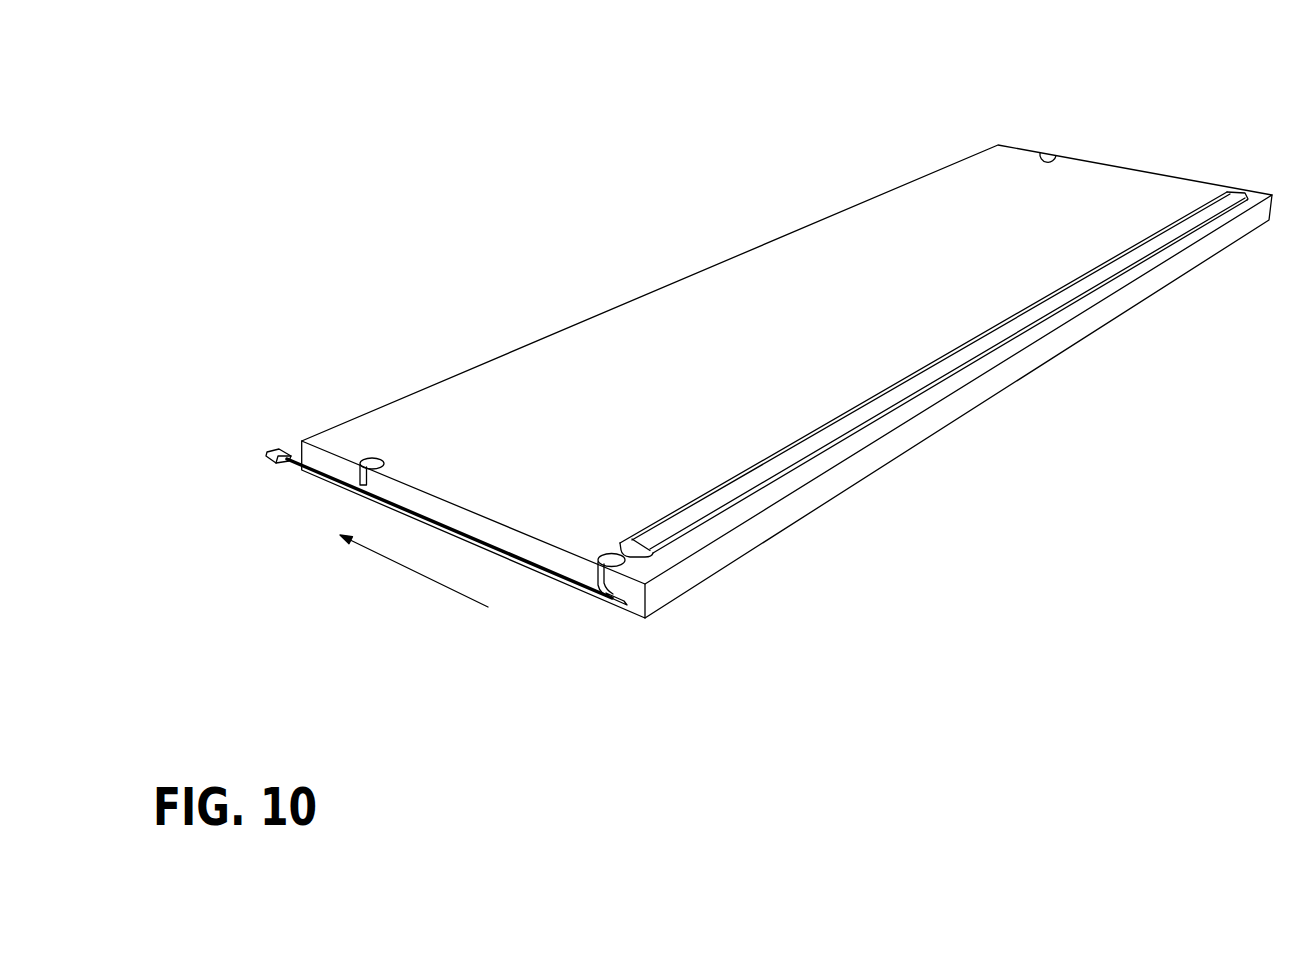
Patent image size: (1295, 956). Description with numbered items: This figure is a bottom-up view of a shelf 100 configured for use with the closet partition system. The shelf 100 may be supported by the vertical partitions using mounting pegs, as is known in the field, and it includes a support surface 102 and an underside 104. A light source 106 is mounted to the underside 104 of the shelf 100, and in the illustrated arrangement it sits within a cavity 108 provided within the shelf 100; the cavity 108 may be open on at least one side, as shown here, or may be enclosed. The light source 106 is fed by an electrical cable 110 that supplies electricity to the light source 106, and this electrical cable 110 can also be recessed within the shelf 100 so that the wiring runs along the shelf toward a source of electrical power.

The shelf 100 is at (1143, 132).
The support surface 102 is at (920, 445).
The underside 104 is at (857, 267).
The light source 106 is at (1110, 267).
The cavity 108 is at (823, 450).
The electrical cable 110 is at (337, 485).